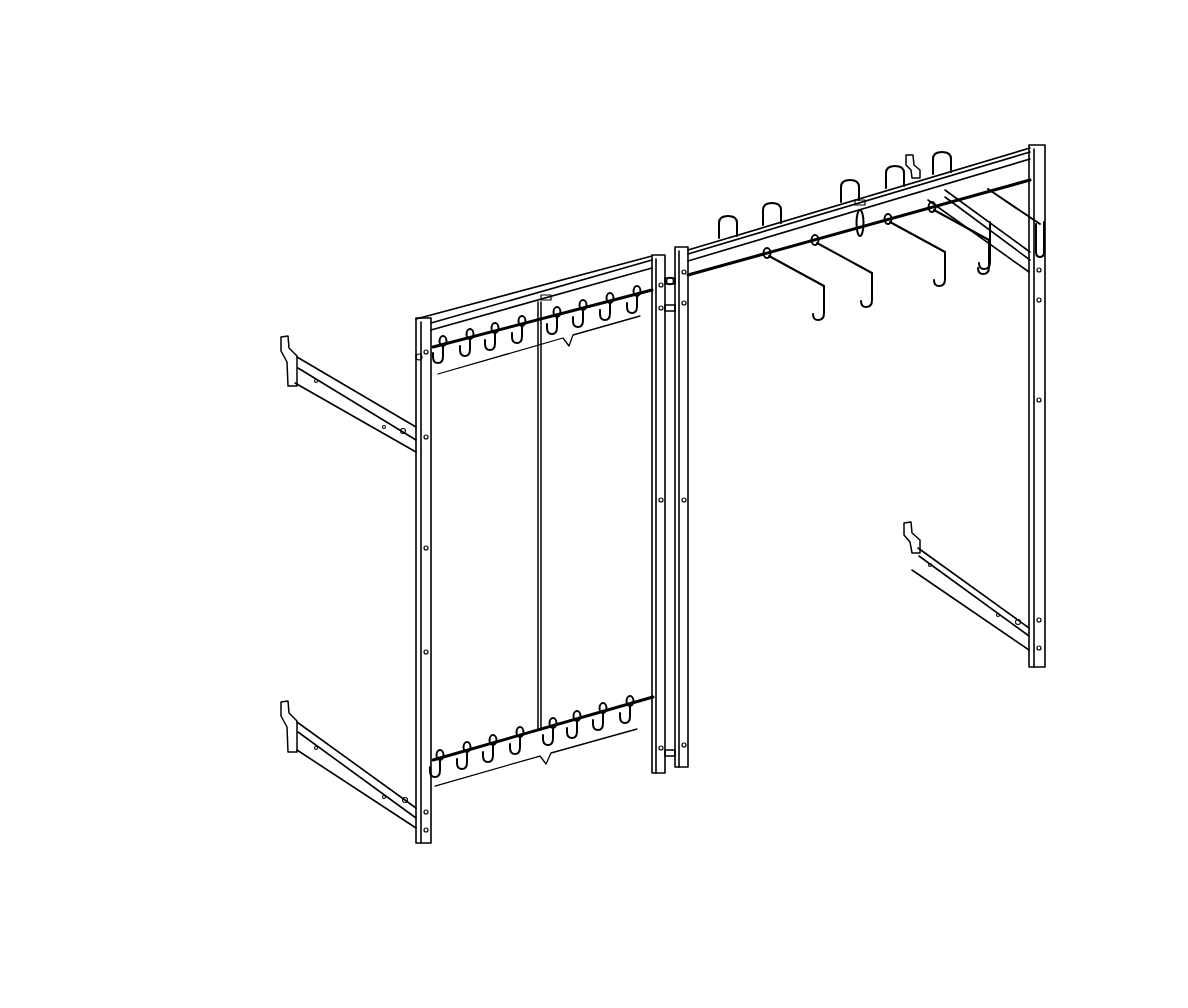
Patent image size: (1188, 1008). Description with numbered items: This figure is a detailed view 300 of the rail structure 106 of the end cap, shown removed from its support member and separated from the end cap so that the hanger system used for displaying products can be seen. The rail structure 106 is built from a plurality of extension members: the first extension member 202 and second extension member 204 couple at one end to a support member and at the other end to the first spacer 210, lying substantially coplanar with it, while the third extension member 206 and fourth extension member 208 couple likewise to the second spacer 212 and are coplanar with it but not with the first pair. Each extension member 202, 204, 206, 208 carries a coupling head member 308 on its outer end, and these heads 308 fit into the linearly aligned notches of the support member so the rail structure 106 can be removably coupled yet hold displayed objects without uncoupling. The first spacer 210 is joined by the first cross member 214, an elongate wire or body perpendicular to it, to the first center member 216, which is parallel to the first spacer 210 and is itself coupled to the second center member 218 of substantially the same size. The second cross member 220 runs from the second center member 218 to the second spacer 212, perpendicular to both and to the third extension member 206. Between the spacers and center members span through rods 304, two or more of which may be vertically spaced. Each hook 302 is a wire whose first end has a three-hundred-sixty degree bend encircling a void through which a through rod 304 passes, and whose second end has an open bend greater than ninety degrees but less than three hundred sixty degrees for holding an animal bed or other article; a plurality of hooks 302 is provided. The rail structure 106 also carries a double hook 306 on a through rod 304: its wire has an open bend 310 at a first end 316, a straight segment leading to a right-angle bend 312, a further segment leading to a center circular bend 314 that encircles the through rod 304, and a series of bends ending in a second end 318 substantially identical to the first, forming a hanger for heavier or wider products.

The rail structure 106 is at (902, 476).
The first extension member 202 is at (353, 411).
The second extension member 204 is at (352, 775).
The third extension member 206 is at (977, 238).
The fourth extension member 208 is at (960, 598).
The first spacer 210 is at (414, 552).
The second spacer 212 is at (1045, 424).
The first cross member 214 is at (487, 301).
The first center member 216 is at (648, 497).
The second center member 218 is at (688, 431).
The second cross member 220 is at (690, 250).
The detailed view 300 is at (314, 160).
The hook 302 is at (535, 543).
The through rod 304 is at (598, 303).
The double hook 306 is at (912, 263).
The coupling head member 308 is at (283, 352).
The open bend 310 is at (863, 300).
The 90 degree bend 312 is at (875, 330).
The center circular bend 314 is at (1018, 207).
The first end 316 is at (871, 322).
The second end 318 is at (760, 201).